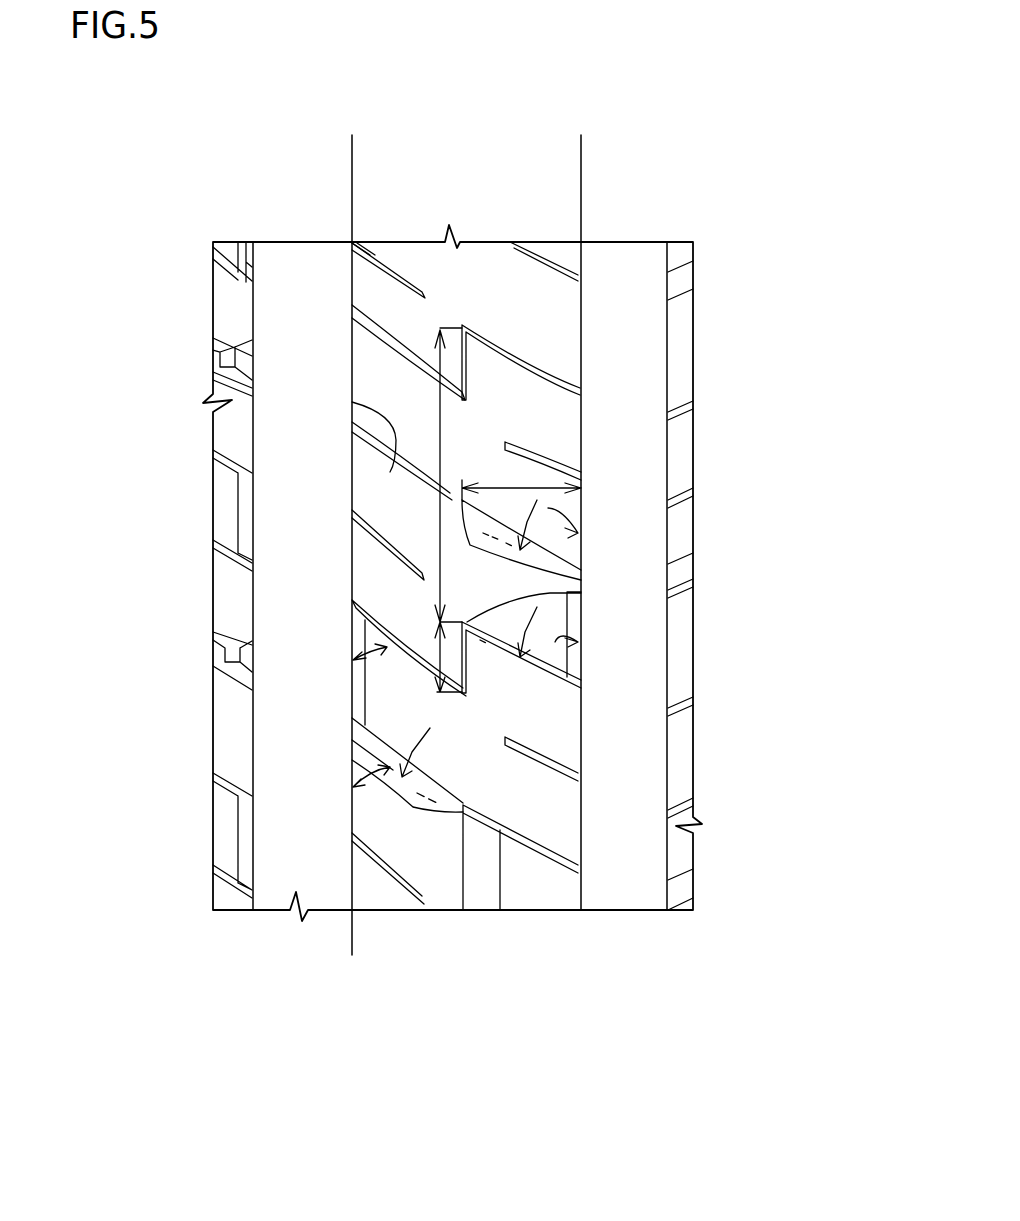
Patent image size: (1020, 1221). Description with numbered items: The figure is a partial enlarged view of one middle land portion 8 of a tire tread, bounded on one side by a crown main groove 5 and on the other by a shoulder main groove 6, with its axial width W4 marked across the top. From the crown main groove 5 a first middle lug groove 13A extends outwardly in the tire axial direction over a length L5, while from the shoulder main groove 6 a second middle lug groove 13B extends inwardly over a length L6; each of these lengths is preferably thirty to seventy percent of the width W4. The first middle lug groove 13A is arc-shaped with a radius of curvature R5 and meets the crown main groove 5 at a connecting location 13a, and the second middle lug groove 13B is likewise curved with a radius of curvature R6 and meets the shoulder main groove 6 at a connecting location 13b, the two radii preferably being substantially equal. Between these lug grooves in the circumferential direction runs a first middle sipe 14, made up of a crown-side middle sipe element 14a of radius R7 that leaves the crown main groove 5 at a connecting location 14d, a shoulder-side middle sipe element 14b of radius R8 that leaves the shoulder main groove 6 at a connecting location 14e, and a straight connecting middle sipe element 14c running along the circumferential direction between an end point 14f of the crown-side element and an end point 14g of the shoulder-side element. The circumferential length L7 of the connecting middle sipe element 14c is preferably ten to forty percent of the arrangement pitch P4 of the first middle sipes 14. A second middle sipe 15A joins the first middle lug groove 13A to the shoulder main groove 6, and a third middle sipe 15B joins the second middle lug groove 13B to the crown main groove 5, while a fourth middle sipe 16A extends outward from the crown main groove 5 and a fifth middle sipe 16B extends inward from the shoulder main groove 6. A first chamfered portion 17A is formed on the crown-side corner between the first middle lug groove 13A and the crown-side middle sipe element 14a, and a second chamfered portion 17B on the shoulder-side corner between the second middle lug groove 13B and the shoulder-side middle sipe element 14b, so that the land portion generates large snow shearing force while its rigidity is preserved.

The crown main groove 5 is at (625, 293).
The shoulder main groove 6 is at (299, 275).
The middle land portion 8 is at (493, 290).
The width of the middle land portion W4 is at (567, 148).
The length of the second middle lug groove L6 is at (464, 955).
The length of the first middle lug groove L5 is at (523, 487).
The length of the connecting middle sipe element L7 is at (440, 657).
The arrangement pitch of the first middle sipes P4 is at (440, 427).
The first middle sipe 14 is at (527, 363).
The crown-side middle sipe element 14a is at (597, 690).
The shoulder-side middle sipe element 14b is at (465, 693).
The connecting middle sipe element 14c is at (558, 695).
The connecting location of the crown-side middle sipe element 14d is at (530, 730).
The connecting location of the shoulder-side middle sipe element 14e is at (360, 603).
The end point of the crown-side middle sipe element 14f is at (580, 593).
The end point of the shoulder-side middle sipe element 14g is at (540, 705).
The first middle lug groove 13A is at (558, 567).
The second middle lug groove 13B is at (463, 763).
The connecting location of the first middle lug groove 13a is at (545, 584).
The connecting location of the second middle lug groove 13b is at (352, 740).
The second middle sipe 15A is at (352, 402).
The third middle sipe 15B is at (423, 680).
The fourth middle sipe 16A is at (522, 487).
The fifth middle sipe 16B is at (436, 550).
The first chamfered portion 17A is at (535, 680).
The second chamfered portion 17B is at (360, 643).
The radius of curvature of the first middle lug groove R5 is at (548, 508).
The radius of curvature of the second middle lug groove R6 is at (417, 737).
The radius of curvature of the crown-side middle sipe element R7 is at (555, 642).
The radius of curvature of the shoulder-side middle sipe element R8 is at (423, 610).